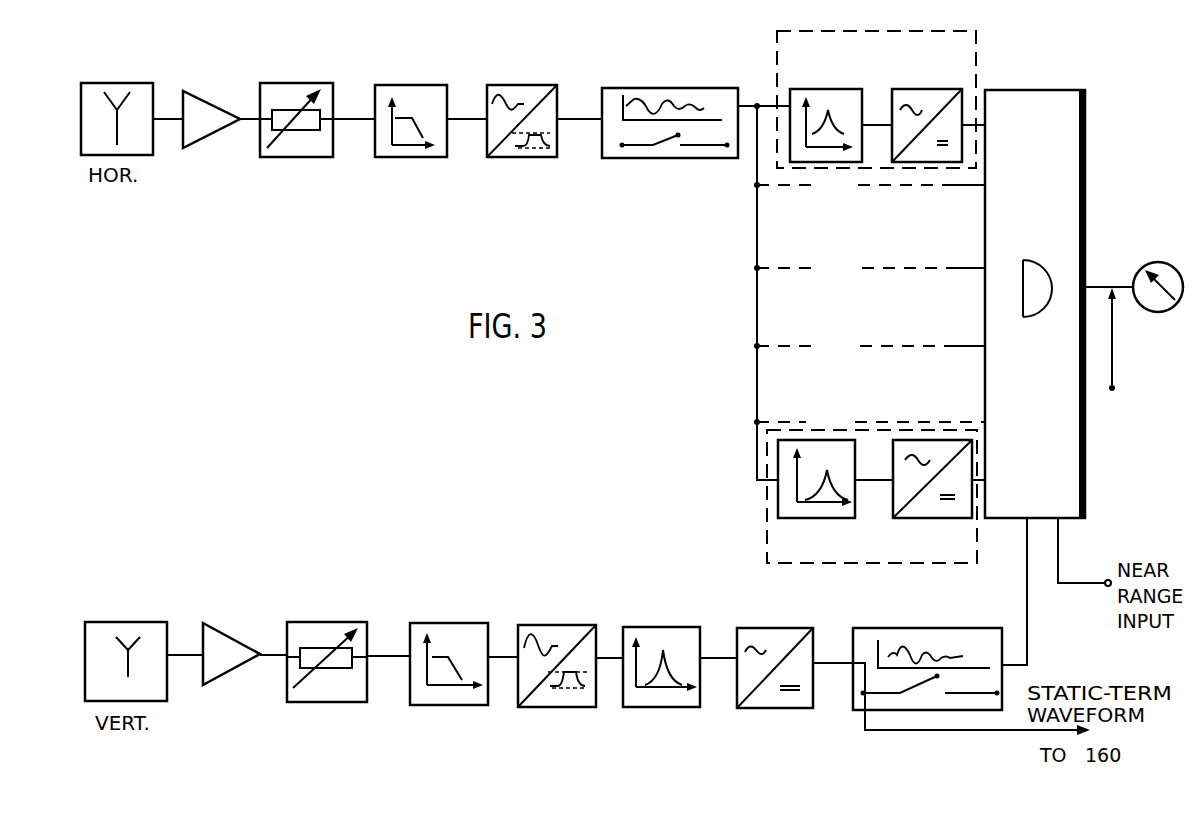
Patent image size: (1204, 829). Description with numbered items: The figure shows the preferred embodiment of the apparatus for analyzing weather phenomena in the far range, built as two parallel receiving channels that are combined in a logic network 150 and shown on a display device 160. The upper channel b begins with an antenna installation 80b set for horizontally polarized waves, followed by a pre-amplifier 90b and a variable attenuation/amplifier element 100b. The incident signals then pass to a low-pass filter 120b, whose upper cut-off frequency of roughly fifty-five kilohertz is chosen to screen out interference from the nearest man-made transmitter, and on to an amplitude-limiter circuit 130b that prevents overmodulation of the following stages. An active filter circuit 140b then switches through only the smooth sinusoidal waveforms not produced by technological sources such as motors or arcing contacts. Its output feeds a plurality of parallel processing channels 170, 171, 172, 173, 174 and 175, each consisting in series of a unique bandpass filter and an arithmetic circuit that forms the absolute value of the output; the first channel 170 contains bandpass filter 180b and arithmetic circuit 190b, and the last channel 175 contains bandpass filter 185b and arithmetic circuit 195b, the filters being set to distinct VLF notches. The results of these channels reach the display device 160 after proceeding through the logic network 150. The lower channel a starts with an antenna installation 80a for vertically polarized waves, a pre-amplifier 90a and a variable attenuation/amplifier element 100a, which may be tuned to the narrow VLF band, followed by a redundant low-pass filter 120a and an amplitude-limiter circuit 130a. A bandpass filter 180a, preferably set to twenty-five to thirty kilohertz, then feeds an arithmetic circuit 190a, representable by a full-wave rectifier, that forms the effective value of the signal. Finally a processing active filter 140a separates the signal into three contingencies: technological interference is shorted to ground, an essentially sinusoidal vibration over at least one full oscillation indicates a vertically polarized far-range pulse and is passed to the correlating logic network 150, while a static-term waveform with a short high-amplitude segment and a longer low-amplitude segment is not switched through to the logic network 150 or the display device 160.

The antenna installation 80b is at (132, 92).
The pre-amplifier 90b is at (190, 98).
The variable attenuation/amplifier element 100b is at (280, 92).
The low-pass filter 120b is at (408, 93).
The amplitude-limiter circuit 130b is at (528, 93).
The active filter circuit 140b is at (617, 98).
The processing channel 170 is at (962, 42).
The bandpass filter 180b is at (822, 97).
The arithmetic circuit 190b is at (903, 97).
The logic network 150 is at (1048, 194).
The processing channel 171 is at (871, 185).
The processing channel 172 is at (871, 268).
The processing channel 173 is at (871, 348).
The processing channel 174 is at (871, 421).
The processing channel 175 is at (770, 556).
The bandpass filter 185b is at (837, 447).
The arithmetic circuit 195b is at (920, 513).
The display device 160 is at (1148, 265).
The antenna installation 80a is at (117, 628).
The pre-amplifier 90a is at (213, 632).
The variable attenuation/amplifier element 100a is at (305, 628).
The low-pass filter 120a is at (423, 630).
The amplitude-limiter circuit 130a is at (525, 632).
The bandpass filter 180a is at (628, 632).
The arithmetic circuit 190a is at (743, 635).
The processing active filter 140a is at (862, 638).